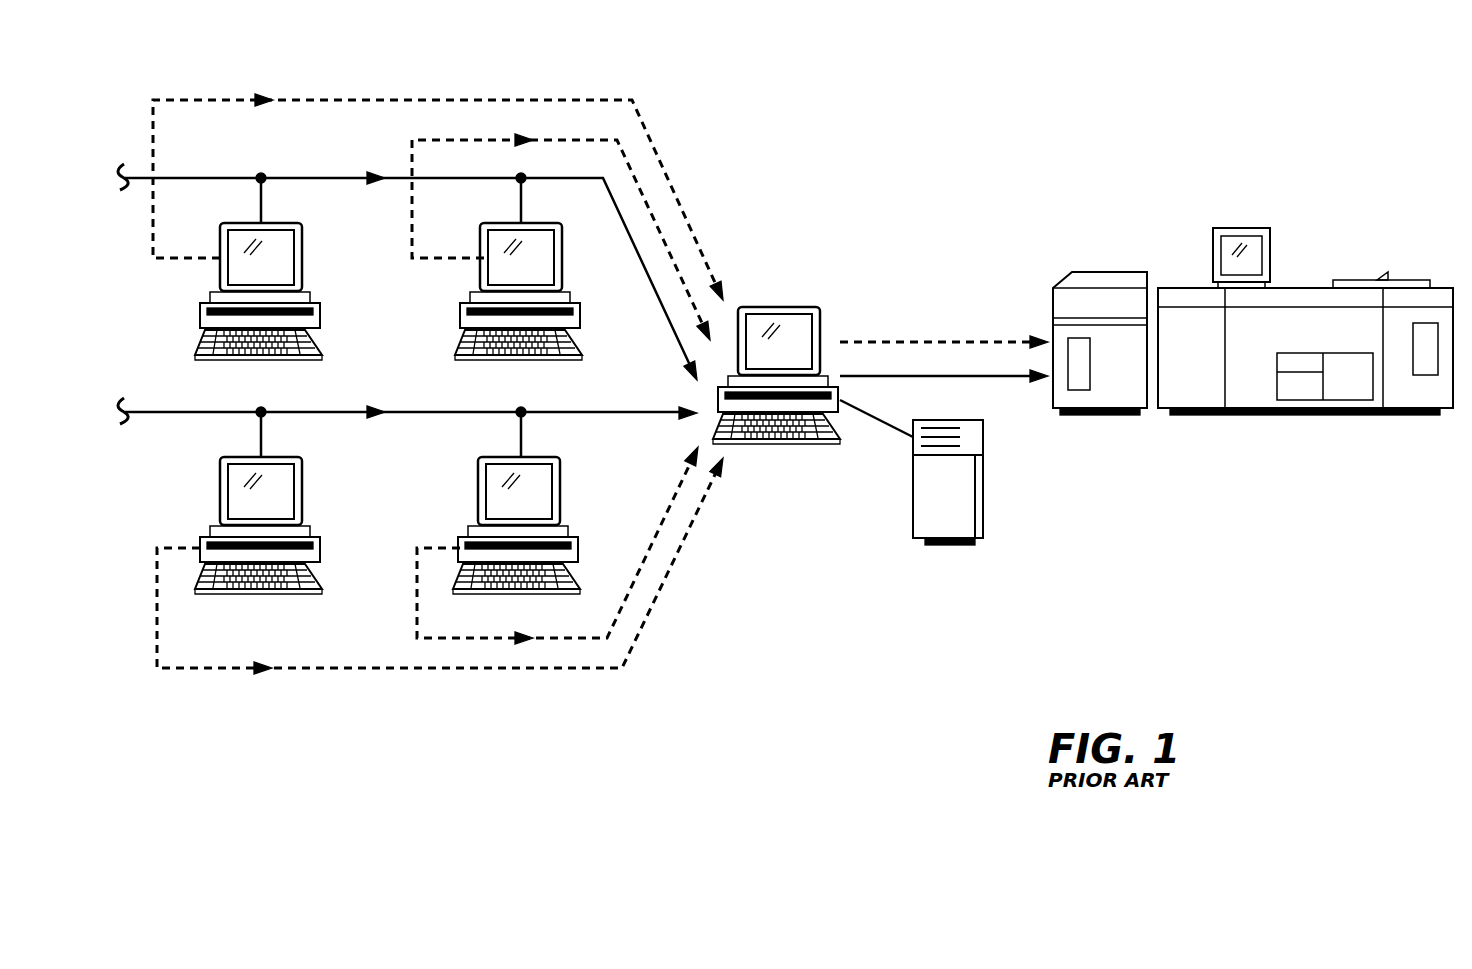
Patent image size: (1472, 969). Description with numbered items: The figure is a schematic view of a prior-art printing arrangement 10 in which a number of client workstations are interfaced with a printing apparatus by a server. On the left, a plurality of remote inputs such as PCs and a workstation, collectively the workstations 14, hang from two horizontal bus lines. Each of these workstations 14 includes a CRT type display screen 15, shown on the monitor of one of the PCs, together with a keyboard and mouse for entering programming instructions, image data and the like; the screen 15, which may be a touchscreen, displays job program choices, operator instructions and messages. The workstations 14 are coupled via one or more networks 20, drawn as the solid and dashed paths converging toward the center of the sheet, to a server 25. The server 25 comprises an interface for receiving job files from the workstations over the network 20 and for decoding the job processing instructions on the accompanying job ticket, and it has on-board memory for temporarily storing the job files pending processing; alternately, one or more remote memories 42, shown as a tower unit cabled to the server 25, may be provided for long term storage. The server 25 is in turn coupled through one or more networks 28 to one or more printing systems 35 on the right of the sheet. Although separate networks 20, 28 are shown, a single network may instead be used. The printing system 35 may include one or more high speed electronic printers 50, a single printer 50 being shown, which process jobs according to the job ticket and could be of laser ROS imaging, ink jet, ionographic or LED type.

The printing arrangement 10 is at (771, 160).
The workstations 14 is at (437, 504).
The display screen 15 is at (533, 263).
The network 20 is at (657, 413).
The server 25 is at (780, 305).
The network 28 is at (945, 378).
The printing system 35 is at (1253, 338).
The remote memory 42 is at (913, 497).
The high speed electronic printer 50 is at (1255, 398).